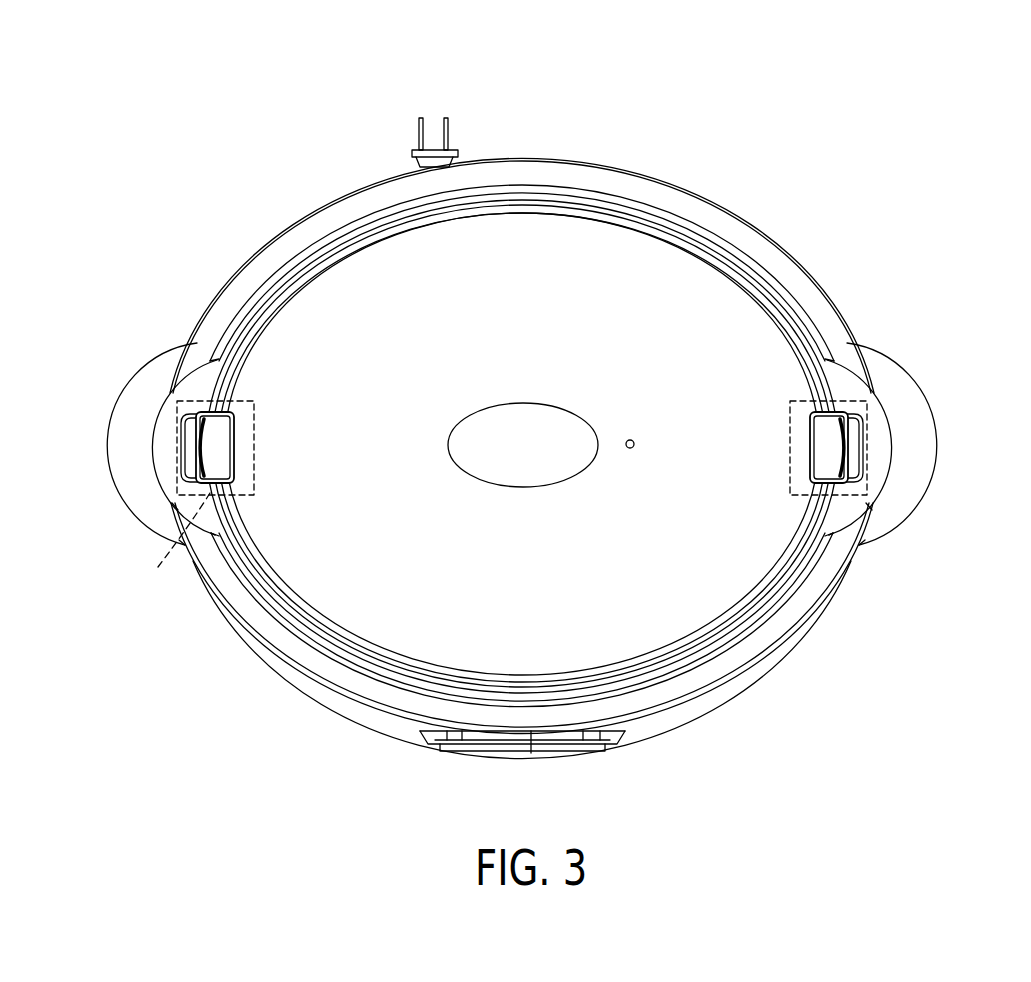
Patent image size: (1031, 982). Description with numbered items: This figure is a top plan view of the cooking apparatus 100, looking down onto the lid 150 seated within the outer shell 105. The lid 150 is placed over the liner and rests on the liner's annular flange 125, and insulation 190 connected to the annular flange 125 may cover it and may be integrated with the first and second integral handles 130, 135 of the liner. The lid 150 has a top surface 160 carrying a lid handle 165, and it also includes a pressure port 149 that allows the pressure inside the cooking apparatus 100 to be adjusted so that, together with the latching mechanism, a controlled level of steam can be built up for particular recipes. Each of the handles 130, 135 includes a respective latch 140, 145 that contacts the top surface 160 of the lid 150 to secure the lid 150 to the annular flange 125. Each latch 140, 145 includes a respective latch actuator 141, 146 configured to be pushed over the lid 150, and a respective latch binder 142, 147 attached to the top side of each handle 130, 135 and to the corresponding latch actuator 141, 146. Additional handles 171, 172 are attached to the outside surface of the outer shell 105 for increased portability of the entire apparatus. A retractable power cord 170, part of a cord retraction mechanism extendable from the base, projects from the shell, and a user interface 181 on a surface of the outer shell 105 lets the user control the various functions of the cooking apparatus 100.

The cooking apparatus 100 is at (316, 90).
The outer shell 105 is at (742, 218).
The annular flange 125 is at (365, 663).
The first integral handle 130 is at (136, 428).
The second integral handle 135 is at (915, 444).
The latch 140 is at (177, 544).
The latch actuator 141 is at (222, 447).
The latch binder 142 is at (197, 412).
The latch 145 is at (790, 410).
The latch actuator 146 is at (813, 450).
The latch binder 147 is at (852, 484).
The pressure port 149 is at (632, 440).
The lid 150 is at (548, 471).
The top surface 160 is at (690, 590).
The lid handle 165 is at (544, 403).
The retractable power cord 170 is at (450, 133).
The additional handle 171 is at (133, 372).
The additional handle 172 is at (938, 480).
The user interface 181 is at (568, 757).
The insulation 190 is at (806, 553).